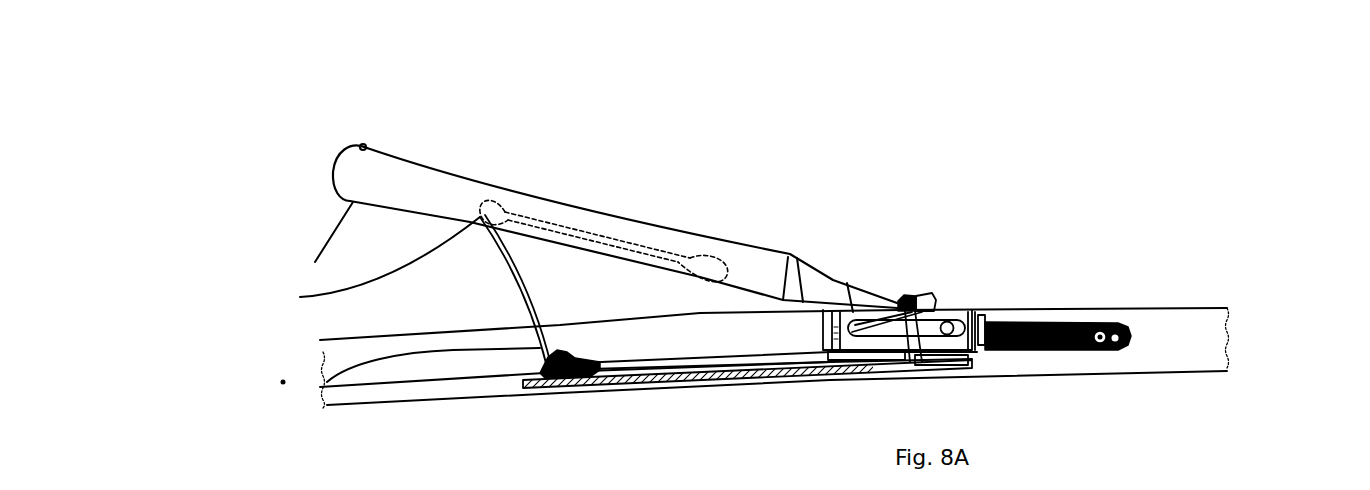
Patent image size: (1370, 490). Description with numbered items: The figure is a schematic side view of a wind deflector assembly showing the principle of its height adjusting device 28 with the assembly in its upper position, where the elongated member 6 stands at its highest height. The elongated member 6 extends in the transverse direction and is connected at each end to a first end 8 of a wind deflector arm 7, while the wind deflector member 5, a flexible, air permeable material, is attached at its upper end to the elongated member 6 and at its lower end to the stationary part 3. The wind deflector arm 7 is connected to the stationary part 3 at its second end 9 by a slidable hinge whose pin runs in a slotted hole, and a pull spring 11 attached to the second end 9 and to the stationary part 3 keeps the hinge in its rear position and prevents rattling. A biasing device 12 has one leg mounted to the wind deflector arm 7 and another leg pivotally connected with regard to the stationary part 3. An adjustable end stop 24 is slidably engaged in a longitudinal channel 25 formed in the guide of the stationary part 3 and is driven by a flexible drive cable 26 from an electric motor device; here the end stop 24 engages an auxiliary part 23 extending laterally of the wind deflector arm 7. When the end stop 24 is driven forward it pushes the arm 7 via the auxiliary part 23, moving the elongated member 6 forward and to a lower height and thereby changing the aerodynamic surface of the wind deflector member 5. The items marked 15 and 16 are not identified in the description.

The stationary part 3 is at (1127, 372).
The wind deflector member 5 is at (327, 241).
The elongated member 6 is at (362, 146).
The wind deflector arm 7 is at (613, 233).
The first end of wind deflector arm 8 is at (518, 282).
The second end of wind deflector arm 9 is at (553, 232).
The pull spring 11 is at (1080, 328).
The biasing device 12 is at (583, 277).
The link 15 is at (300, 297).
The base member 16 is at (325, 387).
The auxiliary part 23 is at (900, 297).
The adjustable end stop 24 is at (927, 297).
The channel 25 is at (476, 386).
The flexible drive cable 26 is at (580, 393).
The height adjusting device 28 is at (917, 383).